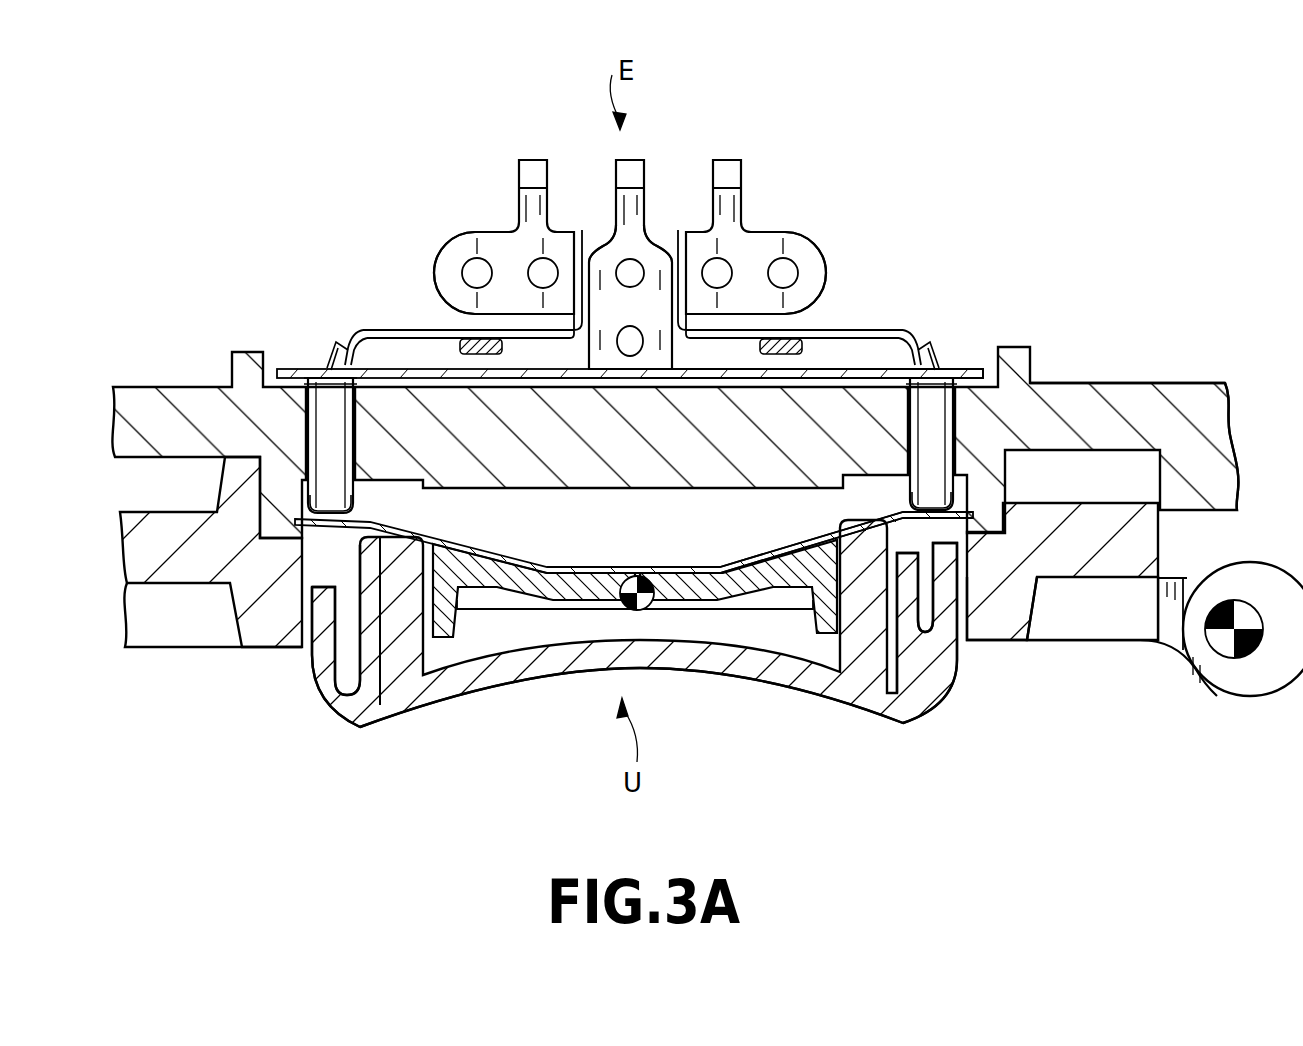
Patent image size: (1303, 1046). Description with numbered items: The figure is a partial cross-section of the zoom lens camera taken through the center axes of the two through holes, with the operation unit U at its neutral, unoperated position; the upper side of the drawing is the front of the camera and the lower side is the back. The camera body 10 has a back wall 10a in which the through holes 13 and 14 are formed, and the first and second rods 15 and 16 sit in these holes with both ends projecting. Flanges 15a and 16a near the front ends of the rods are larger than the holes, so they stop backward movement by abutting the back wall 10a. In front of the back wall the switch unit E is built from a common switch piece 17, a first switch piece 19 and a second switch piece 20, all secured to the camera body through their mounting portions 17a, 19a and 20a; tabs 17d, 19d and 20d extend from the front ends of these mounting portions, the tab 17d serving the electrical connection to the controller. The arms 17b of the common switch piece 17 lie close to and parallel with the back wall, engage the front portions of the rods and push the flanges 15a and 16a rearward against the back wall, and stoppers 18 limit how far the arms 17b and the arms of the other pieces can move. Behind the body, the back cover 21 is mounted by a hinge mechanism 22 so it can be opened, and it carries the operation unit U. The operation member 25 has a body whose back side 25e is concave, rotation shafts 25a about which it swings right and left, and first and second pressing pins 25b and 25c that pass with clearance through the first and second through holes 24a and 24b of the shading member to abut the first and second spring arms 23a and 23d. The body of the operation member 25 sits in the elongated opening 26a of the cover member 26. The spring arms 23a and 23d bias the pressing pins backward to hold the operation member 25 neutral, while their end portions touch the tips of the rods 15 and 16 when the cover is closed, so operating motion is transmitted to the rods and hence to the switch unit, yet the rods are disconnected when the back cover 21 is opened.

The camera body 10 is at (147, 410).
The back wall 10a is at (1118, 403).
The through hole 13 is at (317, 452).
The through hole 14 is at (940, 463).
The first rod 15 is at (340, 500).
The flange 15a is at (300, 368).
The second rod 16 is at (920, 495).
The flange 16a is at (945, 372).
The common switch piece 17 is at (643, 192).
The mounting portion 17a is at (632, 212).
The arms 17b is at (553, 378).
The tab 17d is at (620, 174).
The stoppers 18 is at (447, 332).
The first switch piece 19 is at (500, 230).
The mounting portion 19a is at (455, 265).
The tab 19d is at (525, 170).
The second switch piece 20 is at (742, 205).
The mounting portion 20a is at (797, 255).
The tab 20d is at (723, 172).
The back cover 21 is at (185, 633).
The hinge mechanism 22 is at (1245, 604).
The first spring arm 23a is at (510, 520).
The second spring arm 23d is at (787, 541).
The first through hole 24a is at (335, 652).
The second through hole 24b is at (905, 637).
The operation member 25 is at (748, 668).
The rotation shafts 25a is at (640, 576).
The first pressing pin 25b is at (402, 633).
The second pressing pin 25c is at (865, 628).
The back side 25e is at (537, 677).
The cover member 26 is at (140, 550).
The elongated opening 26a is at (1022, 585).